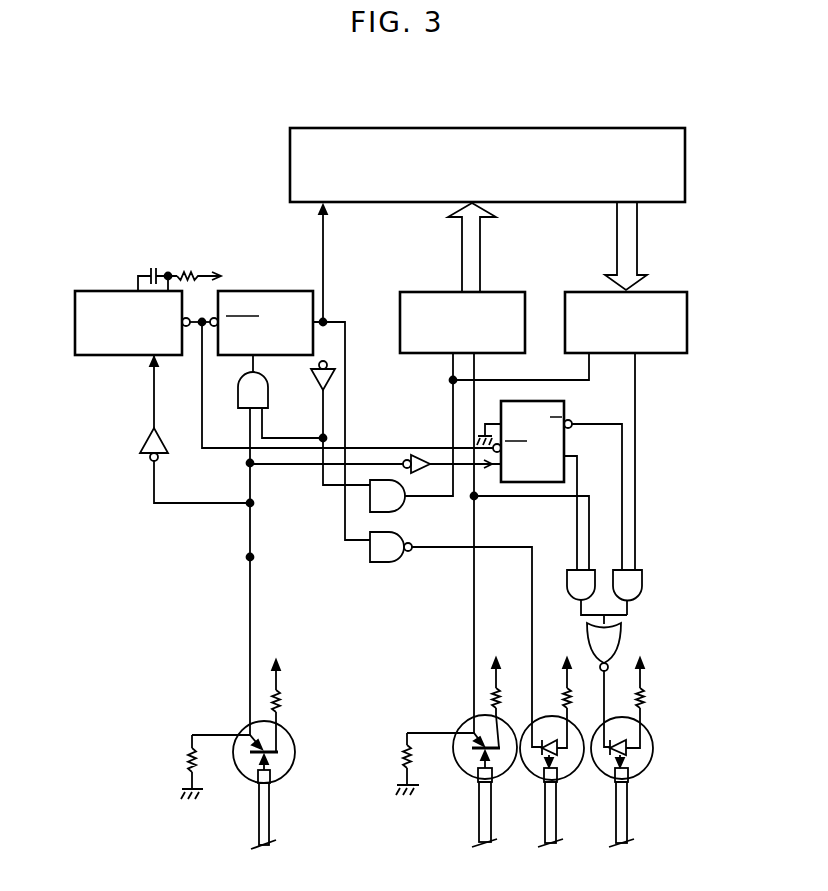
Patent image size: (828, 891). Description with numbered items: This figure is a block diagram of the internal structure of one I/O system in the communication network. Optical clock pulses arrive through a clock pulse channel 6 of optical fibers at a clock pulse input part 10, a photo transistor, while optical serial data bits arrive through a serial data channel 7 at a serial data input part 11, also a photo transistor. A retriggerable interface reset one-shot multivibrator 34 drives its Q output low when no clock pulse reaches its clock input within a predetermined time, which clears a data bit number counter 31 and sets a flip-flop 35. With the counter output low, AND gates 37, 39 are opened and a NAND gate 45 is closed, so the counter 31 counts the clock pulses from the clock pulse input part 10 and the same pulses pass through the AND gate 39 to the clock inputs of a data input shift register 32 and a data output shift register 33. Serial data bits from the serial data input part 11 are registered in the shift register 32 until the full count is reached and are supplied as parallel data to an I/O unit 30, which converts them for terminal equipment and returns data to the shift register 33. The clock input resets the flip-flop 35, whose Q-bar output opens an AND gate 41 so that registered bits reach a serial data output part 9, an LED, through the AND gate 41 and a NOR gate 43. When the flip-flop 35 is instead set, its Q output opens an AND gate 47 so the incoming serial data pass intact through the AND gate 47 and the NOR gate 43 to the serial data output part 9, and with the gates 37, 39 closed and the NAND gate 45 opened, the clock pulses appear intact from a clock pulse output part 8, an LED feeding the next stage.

The I/O unit 30 is at (290, 171).
The data bit number counter 31 is at (270, 291).
The data input shift register 32 is at (420, 292).
The data output shift register 33 is at (578, 292).
The interface reset one-shot multivibrator 34 is at (100, 355).
The flip-flop 35 is at (565, 402).
The AND gate 37 is at (268, 396).
The AND gate 39 is at (407, 503).
The AND gate 41 is at (642, 578).
The NOR gate 43 is at (620, 628).
The NAND gate 45 is at (383, 563).
The AND gate 47 is at (560, 570).
The clock pulse input part 10 is at (246, 731).
The serial data input part 11 is at (462, 732).
The clock pulse output part 8 is at (571, 780).
The serial data output part 9 is at (652, 744).
The clock pulse channel 6 is at (271, 803).
The serial data channel 7 is at (478, 817).